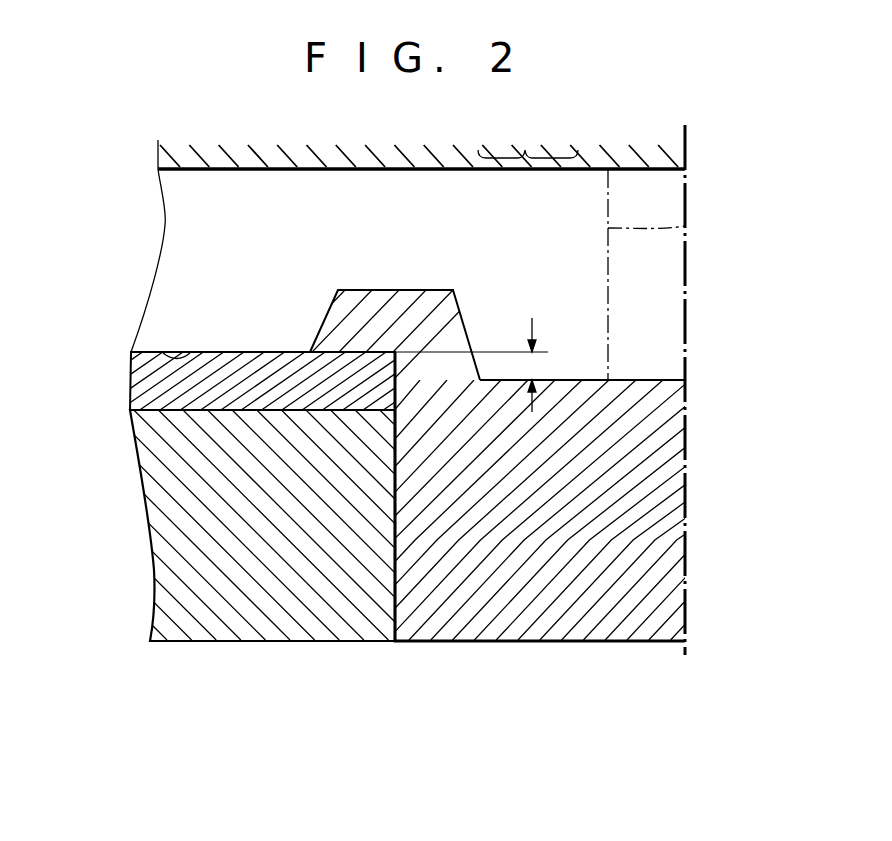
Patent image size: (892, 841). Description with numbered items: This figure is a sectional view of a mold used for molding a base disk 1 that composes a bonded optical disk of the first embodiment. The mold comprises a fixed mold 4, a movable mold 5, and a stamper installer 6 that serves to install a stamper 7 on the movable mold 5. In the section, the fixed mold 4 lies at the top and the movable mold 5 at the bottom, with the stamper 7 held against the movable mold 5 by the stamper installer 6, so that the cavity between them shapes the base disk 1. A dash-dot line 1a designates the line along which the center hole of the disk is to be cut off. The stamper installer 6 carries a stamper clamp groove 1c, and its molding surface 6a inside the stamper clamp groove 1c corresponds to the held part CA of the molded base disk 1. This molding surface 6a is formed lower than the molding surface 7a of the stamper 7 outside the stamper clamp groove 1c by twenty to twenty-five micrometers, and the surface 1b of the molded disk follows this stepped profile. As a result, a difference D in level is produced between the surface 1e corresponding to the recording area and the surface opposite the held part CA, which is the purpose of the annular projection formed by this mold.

The base disk 1 is at (667, 283).
The center hole cutting line 1a is at (685, 226).
The etched bottom surface 1b is at (633, 382).
The stamper clamp groove 1c is at (410, 291).
The surface corresponding to a recording area 1e is at (158, 352).
The fixed mold 4 is at (673, 150).
The movable mold 5 is at (337, 628).
The stamper installer 6 is at (668, 540).
The molding surface 6a is at (657, 380).
The stamper 7 is at (137, 376).
The molding surface 7a is at (233, 352).
The held part CA is at (525, 150).
The difference in level D is at (471, 351).